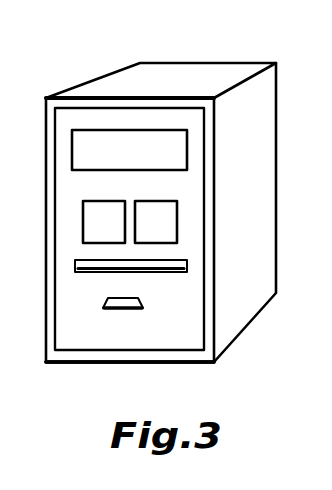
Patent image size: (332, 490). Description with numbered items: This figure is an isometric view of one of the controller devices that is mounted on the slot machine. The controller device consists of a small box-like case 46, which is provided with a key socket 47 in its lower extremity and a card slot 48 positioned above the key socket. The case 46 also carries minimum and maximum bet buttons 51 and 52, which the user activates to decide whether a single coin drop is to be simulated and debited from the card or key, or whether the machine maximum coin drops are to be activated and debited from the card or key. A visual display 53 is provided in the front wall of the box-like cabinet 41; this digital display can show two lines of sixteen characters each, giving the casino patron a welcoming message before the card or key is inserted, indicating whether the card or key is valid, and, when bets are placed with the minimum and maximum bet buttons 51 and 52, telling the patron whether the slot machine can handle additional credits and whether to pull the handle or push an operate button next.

The box-like cabinet 41 is at (157, 62).
The visual display 53 is at (183, 157).
The minimum bet button 51 is at (99, 203).
The maximum bet button 52 is at (160, 203).
The card slot 48 is at (140, 267).
The key socket 47 is at (130, 308).
The box-like case 46 is at (145, 363).